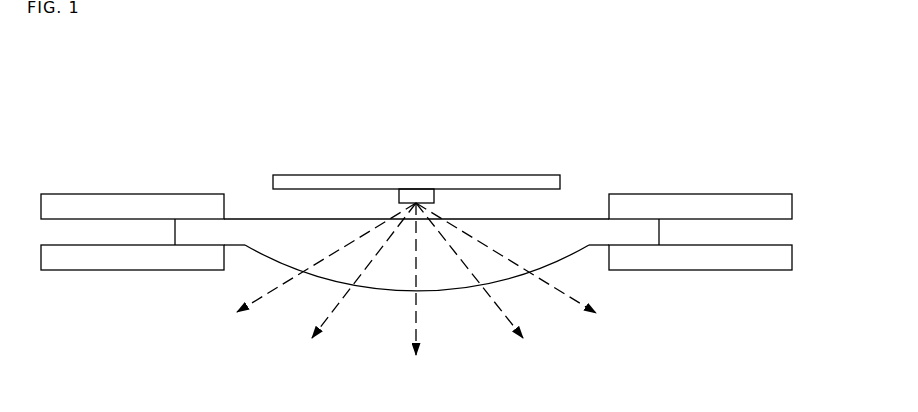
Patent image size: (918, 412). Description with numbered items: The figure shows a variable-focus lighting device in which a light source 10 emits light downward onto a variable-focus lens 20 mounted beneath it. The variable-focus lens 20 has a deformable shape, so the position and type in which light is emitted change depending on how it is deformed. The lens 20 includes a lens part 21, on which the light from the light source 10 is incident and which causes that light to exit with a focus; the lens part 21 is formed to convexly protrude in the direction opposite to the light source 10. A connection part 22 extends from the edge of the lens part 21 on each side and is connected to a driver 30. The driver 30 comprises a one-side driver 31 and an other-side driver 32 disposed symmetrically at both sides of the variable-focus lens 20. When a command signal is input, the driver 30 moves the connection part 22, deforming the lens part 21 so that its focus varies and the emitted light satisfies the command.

The light source 10 is at (378, 170).
The variable-focus lens 20 is at (416, 302).
The lens part 21 is at (387, 285).
The connection part 22 is at (196, 235).
The driver 30 is at (416, 172).
The one-side driver 31 is at (121, 190).
The other-side driver 32 is at (711, 190).